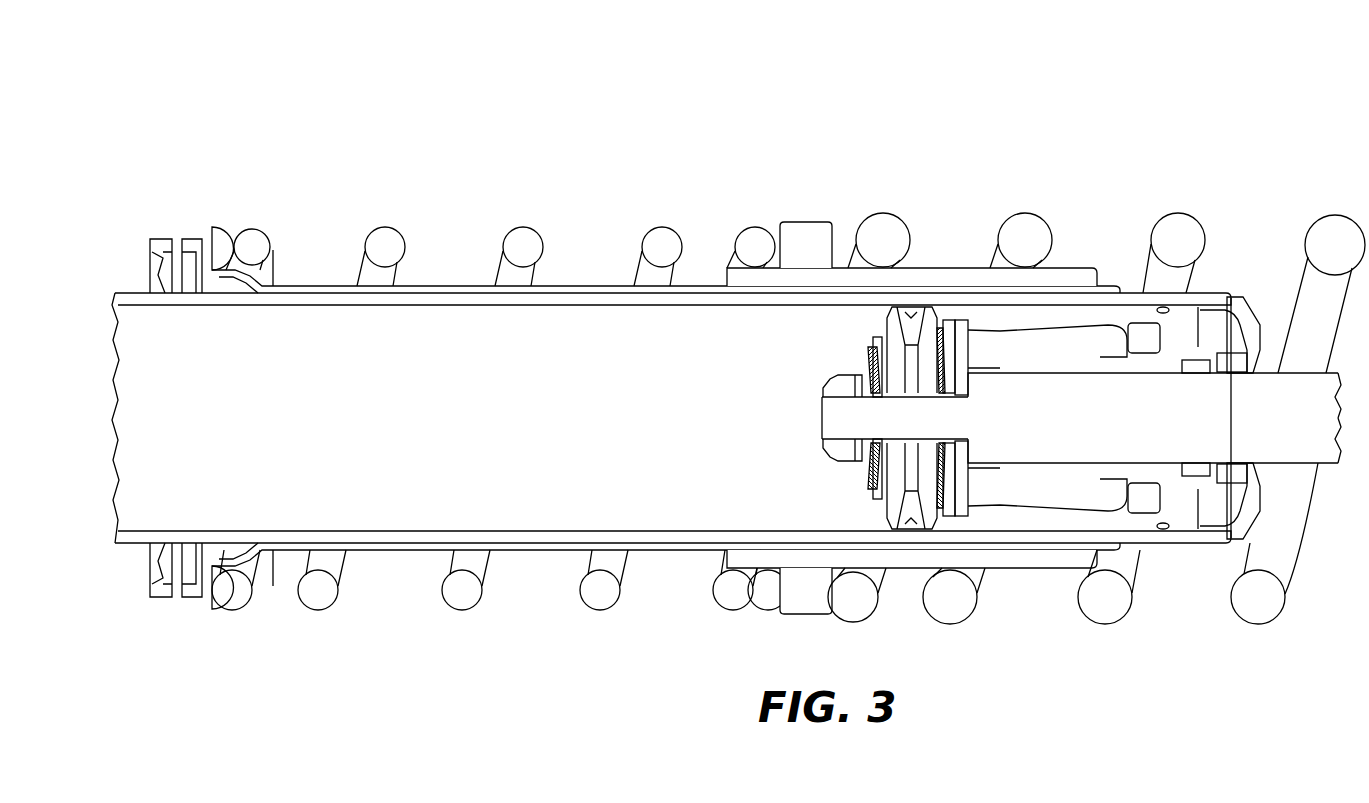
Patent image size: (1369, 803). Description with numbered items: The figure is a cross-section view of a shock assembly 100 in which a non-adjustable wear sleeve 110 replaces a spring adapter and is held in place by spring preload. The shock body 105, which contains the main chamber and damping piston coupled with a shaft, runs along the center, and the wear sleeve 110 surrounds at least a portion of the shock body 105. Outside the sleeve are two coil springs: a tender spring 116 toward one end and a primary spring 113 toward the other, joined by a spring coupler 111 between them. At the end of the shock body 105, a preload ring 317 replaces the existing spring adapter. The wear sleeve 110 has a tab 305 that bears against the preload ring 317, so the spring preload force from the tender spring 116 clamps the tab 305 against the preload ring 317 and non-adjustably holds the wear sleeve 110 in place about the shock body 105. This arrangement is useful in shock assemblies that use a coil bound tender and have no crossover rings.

The shock assembly 100 is at (1210, 80).
The shock body 105 is at (128, 288).
The wear sleeve 110 is at (578, 284).
The spring coupler 111 is at (803, 228).
The primary spring 113 is at (1027, 228).
The tender spring 116 is at (385, 243).
The tab 305 is at (225, 249).
The preload ring 317 is at (160, 237).